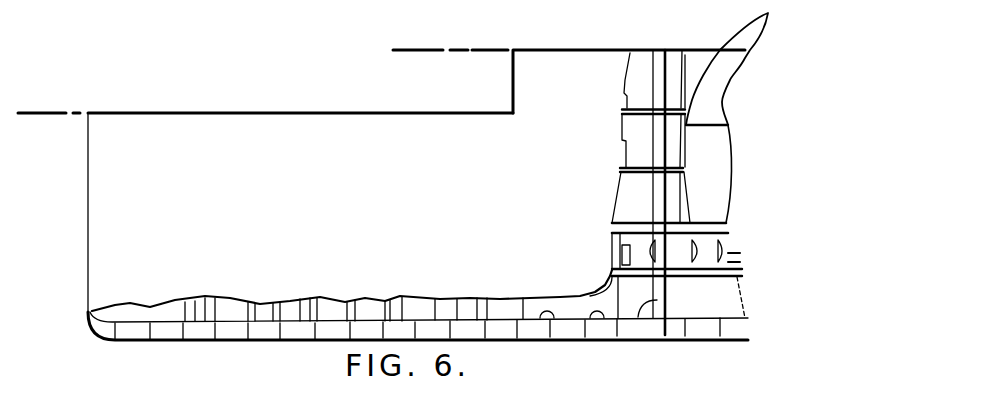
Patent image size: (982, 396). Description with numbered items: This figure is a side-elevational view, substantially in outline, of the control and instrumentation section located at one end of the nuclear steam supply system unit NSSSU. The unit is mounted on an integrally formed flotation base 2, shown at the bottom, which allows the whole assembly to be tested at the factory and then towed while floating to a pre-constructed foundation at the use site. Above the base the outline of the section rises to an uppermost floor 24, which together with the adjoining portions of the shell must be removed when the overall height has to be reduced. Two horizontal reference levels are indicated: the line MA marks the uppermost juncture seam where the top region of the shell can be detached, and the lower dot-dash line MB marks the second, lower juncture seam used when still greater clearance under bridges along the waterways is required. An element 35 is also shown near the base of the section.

The horizontal line MB is at (40, 110).
The horizontal line MA is at (433, 47).
The uppermost floor 24 is at (575, 46).
The nuclear steam supply system unit NSSSU is at (160, 346).
The flotation base 2 is at (253, 342).
The reactor containment structure 35 is at (645, 342).